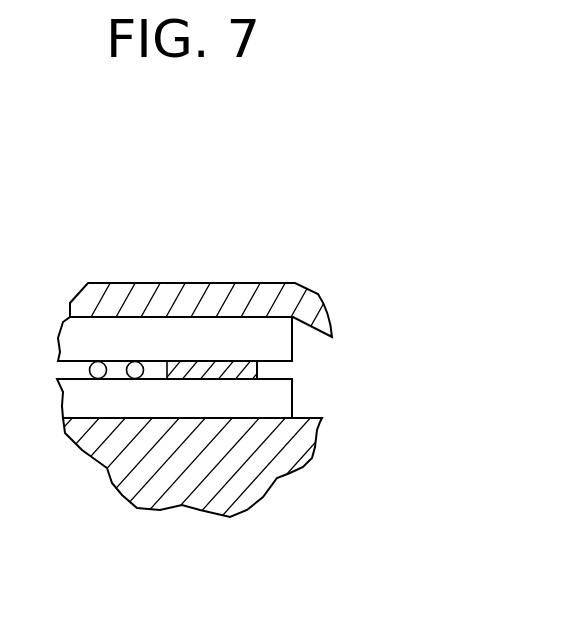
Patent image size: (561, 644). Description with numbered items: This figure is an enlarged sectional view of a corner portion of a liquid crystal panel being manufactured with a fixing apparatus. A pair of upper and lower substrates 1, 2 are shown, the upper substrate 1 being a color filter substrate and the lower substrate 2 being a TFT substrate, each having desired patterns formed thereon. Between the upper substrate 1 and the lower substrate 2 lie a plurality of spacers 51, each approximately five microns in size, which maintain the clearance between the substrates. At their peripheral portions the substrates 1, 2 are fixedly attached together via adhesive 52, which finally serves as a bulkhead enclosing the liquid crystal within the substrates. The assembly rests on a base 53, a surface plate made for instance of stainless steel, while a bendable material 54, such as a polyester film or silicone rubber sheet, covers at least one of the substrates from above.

The upper substrate 1 is at (280, 340).
The lower substrate 2 is at (278, 402).
The spacers 51 is at (135, 369).
The adhesive 52 is at (222, 367).
The base 53 is at (237, 460).
The bendable material 54 is at (285, 302).